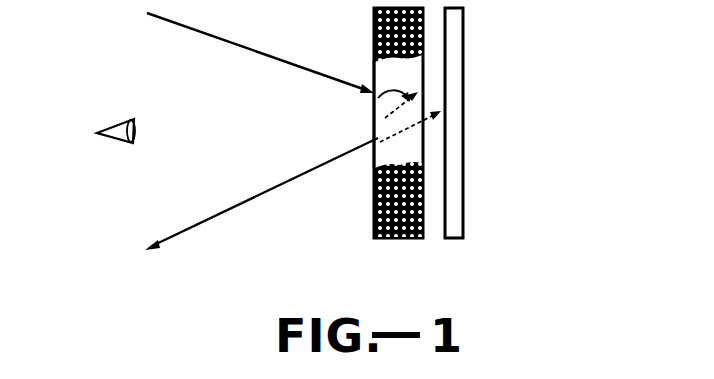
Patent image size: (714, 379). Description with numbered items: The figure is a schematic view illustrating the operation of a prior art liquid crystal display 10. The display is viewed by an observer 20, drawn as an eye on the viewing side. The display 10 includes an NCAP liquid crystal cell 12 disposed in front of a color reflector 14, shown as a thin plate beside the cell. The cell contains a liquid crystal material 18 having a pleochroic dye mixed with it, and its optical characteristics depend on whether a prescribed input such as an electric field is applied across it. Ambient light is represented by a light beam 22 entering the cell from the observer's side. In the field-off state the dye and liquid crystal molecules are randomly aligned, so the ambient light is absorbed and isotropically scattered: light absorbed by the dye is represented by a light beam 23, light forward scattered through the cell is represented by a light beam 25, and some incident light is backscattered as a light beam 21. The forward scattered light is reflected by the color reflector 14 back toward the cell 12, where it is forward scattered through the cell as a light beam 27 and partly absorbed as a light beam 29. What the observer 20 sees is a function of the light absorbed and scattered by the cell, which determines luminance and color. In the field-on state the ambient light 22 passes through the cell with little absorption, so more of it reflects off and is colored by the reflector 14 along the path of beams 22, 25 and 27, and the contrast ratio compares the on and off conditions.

The liquid crystal display 10 is at (554, 100).
The NCAP liquid crystal cell 12 is at (400, 240).
The color reflector 14 is at (463, 218).
The liquid crystal material 18 is at (373, 26).
The observer 20 is at (108, 127).
The backscattered light beam 21 is at (378, 115).
The ambient light beam 22 is at (194, 31).
The absorbed light beam 23 is at (372, 100).
The forward scattered light beam 25 is at (422, 115).
The reflected forward scattered light beam 27 is at (232, 207).
The absorbed reflected light beam 29 is at (372, 143).